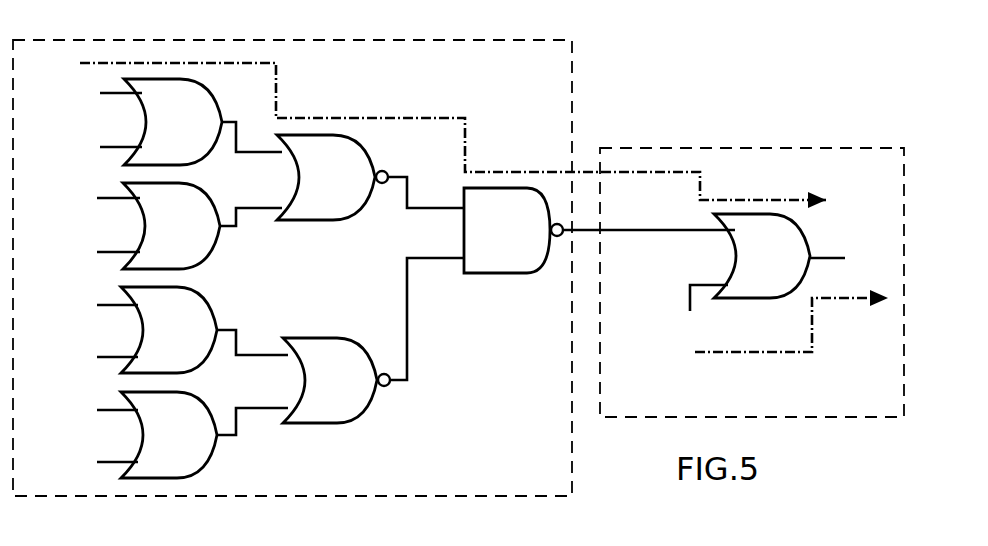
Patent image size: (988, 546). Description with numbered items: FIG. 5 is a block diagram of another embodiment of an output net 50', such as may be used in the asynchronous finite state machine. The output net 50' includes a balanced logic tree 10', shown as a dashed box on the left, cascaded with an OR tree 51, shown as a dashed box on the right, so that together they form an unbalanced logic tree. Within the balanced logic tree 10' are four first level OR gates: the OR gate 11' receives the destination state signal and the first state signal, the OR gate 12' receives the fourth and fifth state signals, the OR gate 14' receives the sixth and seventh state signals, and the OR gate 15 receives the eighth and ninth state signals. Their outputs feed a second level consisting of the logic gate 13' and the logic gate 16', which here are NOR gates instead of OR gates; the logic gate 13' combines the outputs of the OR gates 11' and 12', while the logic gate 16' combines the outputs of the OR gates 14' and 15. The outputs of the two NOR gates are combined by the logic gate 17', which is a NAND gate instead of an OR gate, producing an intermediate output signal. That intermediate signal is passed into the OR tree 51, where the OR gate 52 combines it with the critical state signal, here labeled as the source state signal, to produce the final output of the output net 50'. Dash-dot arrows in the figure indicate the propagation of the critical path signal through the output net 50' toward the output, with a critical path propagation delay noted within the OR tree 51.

The balanced logic tree 10' is at (302, 250).
The OR gate 11' is at (173, 122).
The OR gate 12' is at (171, 226).
The NOR gate 13' is at (332, 177).
The OR gate 14' is at (169, 330).
The OR gate 15 is at (169, 435).
The NOR gate 16' is at (336, 380).
The NAND gate 17' is at (513, 230).
The output net 50' is at (473, 250).
The OR tree 51 is at (870, 148).
The OR gate 52 is at (762, 256).